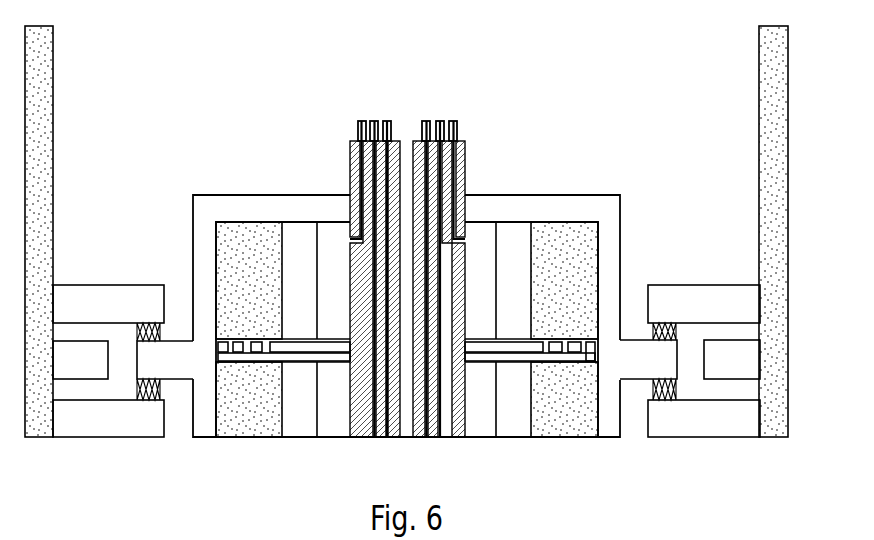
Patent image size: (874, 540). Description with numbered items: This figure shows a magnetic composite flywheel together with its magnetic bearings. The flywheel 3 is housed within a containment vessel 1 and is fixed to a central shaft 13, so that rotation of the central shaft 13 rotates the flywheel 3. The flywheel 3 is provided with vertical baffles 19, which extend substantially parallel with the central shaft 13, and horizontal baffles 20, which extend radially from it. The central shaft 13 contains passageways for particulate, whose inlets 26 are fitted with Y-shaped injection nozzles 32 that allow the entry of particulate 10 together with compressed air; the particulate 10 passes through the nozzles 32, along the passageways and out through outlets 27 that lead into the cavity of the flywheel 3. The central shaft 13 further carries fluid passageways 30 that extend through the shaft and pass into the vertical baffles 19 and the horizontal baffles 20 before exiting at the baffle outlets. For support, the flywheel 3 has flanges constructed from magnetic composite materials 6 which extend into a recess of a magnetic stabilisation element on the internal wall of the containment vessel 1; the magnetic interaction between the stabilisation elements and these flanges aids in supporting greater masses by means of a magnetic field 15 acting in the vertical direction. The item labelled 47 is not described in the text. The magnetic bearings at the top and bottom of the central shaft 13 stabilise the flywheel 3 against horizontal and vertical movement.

The containment vessel 1 is at (775, 422).
The flywheel 3 is at (600, 194).
The magnetic composite materials 6 is at (667, 357).
The particulate 10 is at (237, 256).
The central shaft 13 is at (428, 253).
The magnetic field 15 is at (677, 333).
The vertical baffles 19 is at (332, 325).
The horizontal baffles 20 is at (281, 344).
The inlets 26 is at (353, 140).
The outlets 27 is at (350, 239).
The fluid passageways 30 is at (407, 145).
The Y-shaped injection nozzles 32 is at (387, 121).
The upper block 47 is at (695, 296).